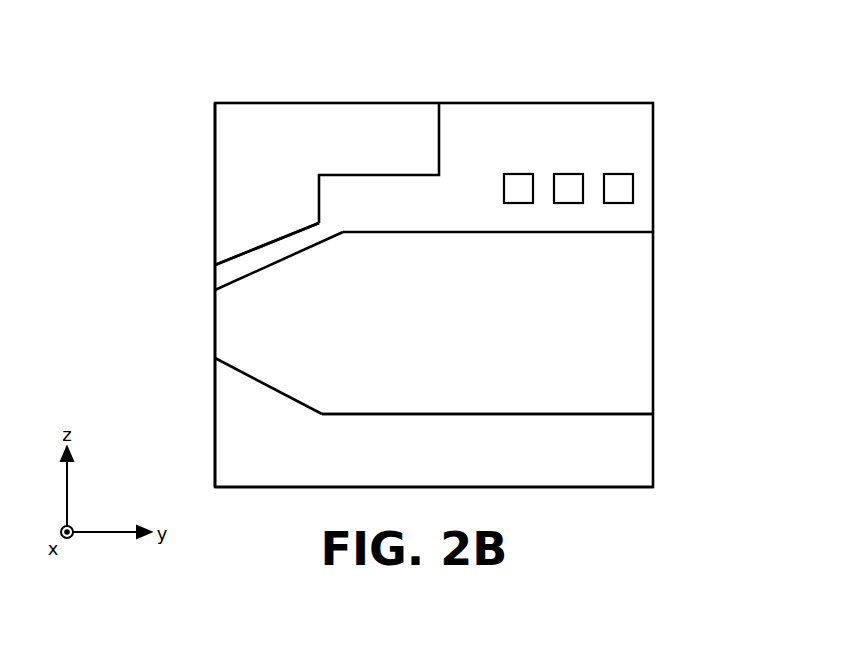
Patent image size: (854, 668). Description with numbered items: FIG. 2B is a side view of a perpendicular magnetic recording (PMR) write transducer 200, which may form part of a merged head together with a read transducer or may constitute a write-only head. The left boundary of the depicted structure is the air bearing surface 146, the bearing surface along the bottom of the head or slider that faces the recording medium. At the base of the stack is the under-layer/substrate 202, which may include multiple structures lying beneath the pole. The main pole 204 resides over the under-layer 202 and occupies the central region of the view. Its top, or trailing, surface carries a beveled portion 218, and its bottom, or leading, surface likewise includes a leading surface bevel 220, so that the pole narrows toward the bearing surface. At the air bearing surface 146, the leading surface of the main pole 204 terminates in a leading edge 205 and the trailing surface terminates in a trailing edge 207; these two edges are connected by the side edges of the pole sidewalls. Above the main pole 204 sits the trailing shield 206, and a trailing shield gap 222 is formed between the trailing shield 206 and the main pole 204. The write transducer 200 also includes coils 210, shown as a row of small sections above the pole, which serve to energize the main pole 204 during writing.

The perpendicular magnetic recording (PMR) transducer 200 is at (181, 93).
The air bearing surface 146 is at (215, 168).
The trailing shield 206 is at (270, 123).
The beveled portion 218 is at (283, 258).
The trailing shield gap 222 is at (226, 274).
The trailing edge 207 is at (215, 290).
The main pole 204 is at (474, 337).
The leading edge 205 is at (215, 358).
The leading surface bevel 220 is at (258, 383).
The under-layer/substrate 202 is at (247, 461).
The coils 210 is at (620, 191).